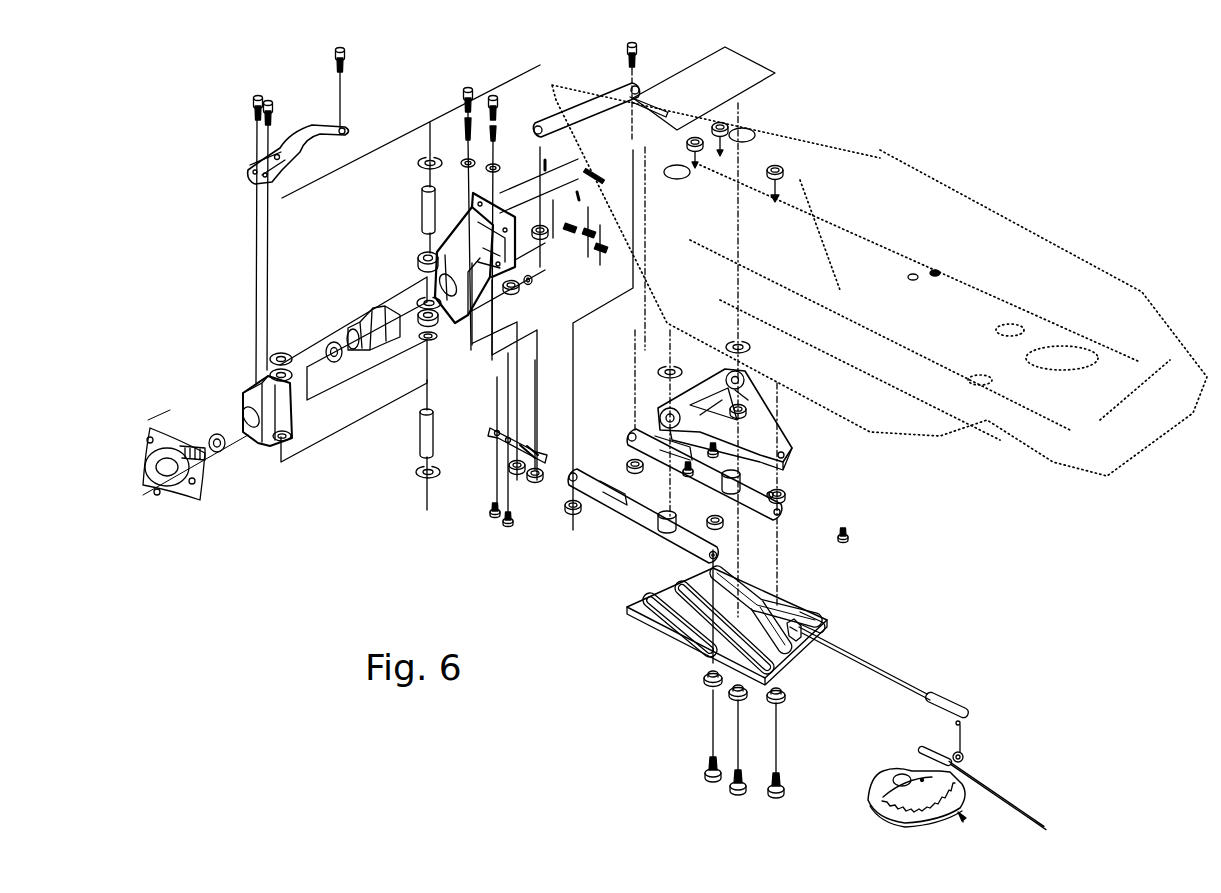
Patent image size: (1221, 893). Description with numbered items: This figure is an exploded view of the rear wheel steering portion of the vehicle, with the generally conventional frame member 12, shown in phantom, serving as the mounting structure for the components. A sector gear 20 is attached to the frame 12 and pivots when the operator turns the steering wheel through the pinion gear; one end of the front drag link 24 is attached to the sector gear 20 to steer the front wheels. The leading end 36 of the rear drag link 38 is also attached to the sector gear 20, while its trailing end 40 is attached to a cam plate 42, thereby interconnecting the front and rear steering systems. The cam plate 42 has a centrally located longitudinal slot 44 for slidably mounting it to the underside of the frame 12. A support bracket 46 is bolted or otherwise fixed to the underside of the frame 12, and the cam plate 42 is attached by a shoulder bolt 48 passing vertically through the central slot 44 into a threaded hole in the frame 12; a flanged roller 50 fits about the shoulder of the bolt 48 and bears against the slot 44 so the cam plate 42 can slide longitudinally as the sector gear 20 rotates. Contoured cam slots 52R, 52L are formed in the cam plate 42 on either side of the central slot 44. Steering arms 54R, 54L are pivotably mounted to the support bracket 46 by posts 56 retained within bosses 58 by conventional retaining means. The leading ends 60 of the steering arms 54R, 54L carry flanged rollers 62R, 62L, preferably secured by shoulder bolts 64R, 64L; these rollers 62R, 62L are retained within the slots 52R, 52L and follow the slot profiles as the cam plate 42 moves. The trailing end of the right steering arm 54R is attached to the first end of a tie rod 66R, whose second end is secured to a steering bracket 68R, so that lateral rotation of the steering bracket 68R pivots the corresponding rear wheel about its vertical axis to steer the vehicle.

The frame member 12 is at (1160, 342).
The sector gear 20 is at (873, 810).
The front drag link 24 is at (993, 790).
The leading end 36 is at (950, 703).
The rear drag link 38 is at (882, 668).
The trailing end 40 is at (827, 623).
The cam plate 42 is at (655, 628).
The longitudinal slot 44 is at (800, 647).
The support bracket 46 is at (763, 432).
The shoulder bolt 48 is at (743, 798).
The flanged roller 50 is at (735, 697).
The cam slot 52R is at (658, 597).
The cam slot 52L is at (758, 600).
The steering arm 54R is at (632, 527).
The steering arm 54L is at (753, 493).
The post 56 is at (728, 473).
The boss 58 is at (668, 410).
The leading end 60 is at (727, 568).
The flanged roller 62R is at (705, 673).
The flanged roller 62L is at (786, 697).
The shoulder bolt 64R is at (700, 768).
The shoulder bolt 64L is at (785, 790).
The tie rod 66R is at (578, 115).
The steering bracket 68R is at (340, 128).